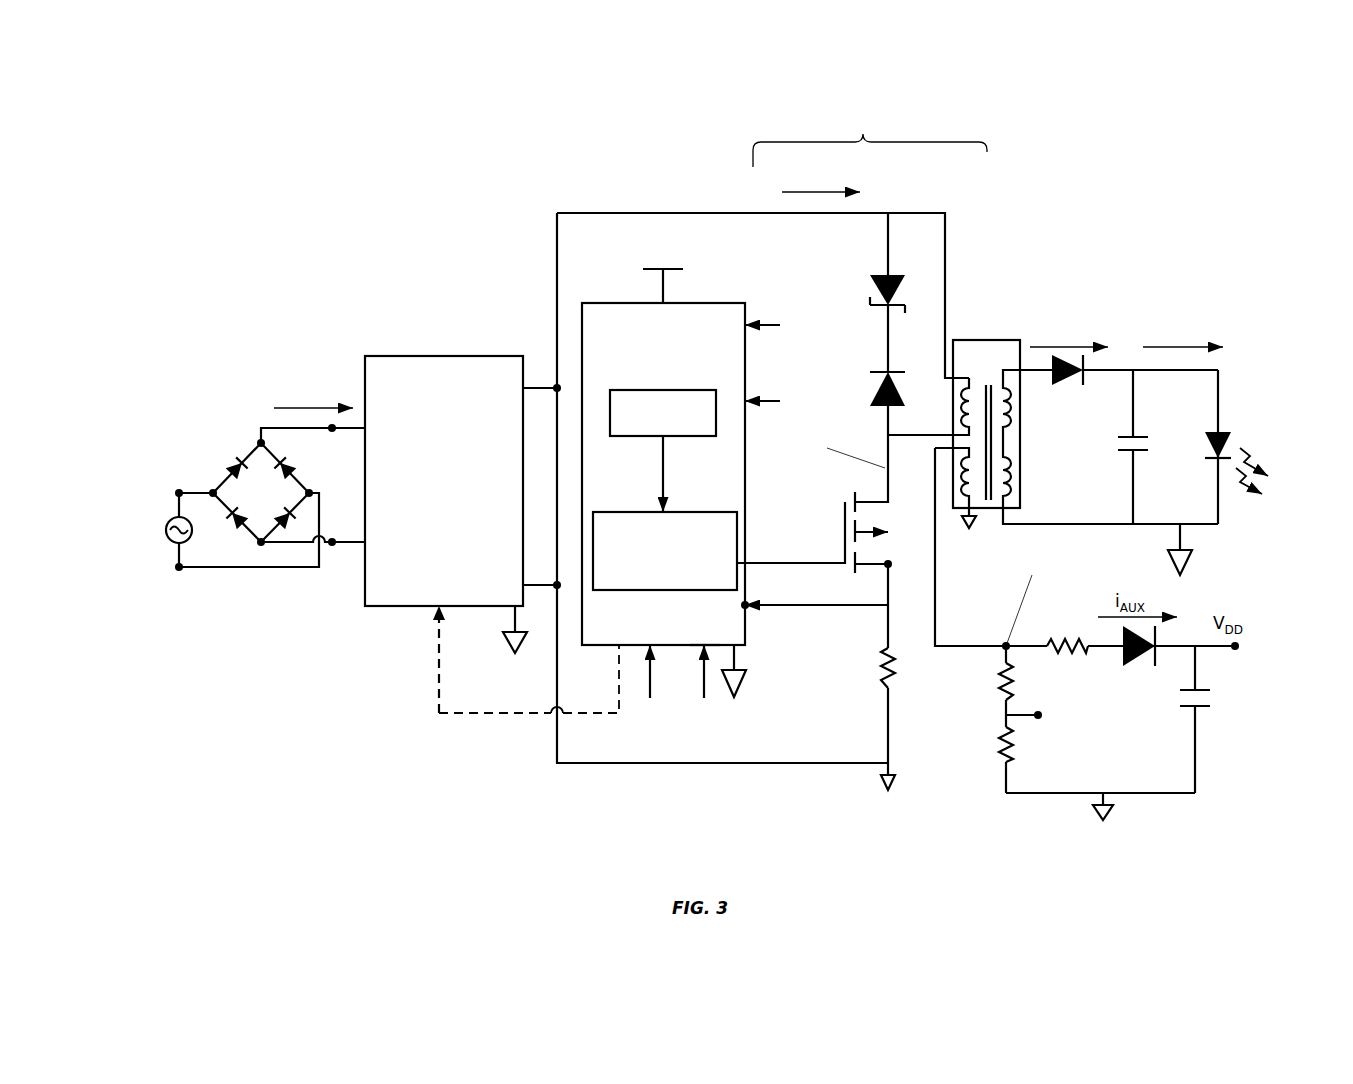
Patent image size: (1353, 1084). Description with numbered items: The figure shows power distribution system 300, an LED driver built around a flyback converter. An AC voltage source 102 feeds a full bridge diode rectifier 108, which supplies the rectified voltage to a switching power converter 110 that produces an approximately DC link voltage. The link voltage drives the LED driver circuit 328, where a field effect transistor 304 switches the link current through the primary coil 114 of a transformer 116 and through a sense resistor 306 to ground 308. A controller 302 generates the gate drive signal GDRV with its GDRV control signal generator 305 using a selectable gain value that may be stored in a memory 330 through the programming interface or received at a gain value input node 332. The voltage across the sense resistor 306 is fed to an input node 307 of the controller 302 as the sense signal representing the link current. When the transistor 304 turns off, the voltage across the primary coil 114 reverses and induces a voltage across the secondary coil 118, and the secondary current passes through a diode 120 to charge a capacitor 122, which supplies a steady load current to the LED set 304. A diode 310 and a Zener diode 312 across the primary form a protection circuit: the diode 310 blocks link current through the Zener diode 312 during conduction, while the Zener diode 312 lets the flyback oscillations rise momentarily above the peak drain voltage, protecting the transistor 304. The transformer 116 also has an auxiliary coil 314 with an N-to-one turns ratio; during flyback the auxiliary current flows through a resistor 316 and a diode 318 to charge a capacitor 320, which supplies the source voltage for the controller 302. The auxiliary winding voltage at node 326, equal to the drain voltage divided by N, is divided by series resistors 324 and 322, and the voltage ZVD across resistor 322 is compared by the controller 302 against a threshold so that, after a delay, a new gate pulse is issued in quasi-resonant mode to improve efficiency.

The power distribution system 300 is at (1152, 182).
The voltage source 102 is at (168, 546).
The full bridge diode rectifier 108 is at (287, 464).
The switching power converter 110 is at (492, 536).
The controller 302 is at (699, 487).
The memory 330 is at (650, 437).
The GDRV control signal generator 305 is at (719, 551).
The gain value input node 332 is at (706, 645).
The input node 307 is at (749, 609).
The field effect transistor / LED set 304 is at (845, 504).
The Zener diode 312 is at (870, 286).
The diode 310 is at (870, 380).
The transformer 116 is at (1053, 411).
The primary coil 114 is at (958, 396).
The auxiliary coil 314 is at (958, 470).
The secondary coil 118 is at (1012, 470).
The diode 120 is at (1068, 388).
The capacitor 122 is at (1126, 452).
The node 326 is at (1006, 646).
The resistor 316 is at (1072, 645).
The diode 318 is at (1128, 660).
The capacitor 320 is at (1209, 705).
The resistor 324 is at (1008, 672).
The resistor 322 is at (1008, 737).
The sense resistor 306 is at (886, 688).
The ground 308 is at (876, 792).
The LED driver circuit 328 is at (870, 149).